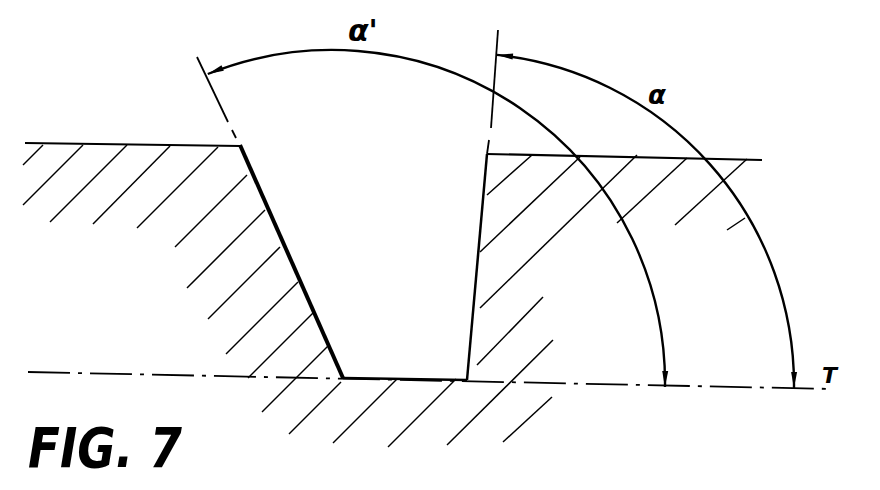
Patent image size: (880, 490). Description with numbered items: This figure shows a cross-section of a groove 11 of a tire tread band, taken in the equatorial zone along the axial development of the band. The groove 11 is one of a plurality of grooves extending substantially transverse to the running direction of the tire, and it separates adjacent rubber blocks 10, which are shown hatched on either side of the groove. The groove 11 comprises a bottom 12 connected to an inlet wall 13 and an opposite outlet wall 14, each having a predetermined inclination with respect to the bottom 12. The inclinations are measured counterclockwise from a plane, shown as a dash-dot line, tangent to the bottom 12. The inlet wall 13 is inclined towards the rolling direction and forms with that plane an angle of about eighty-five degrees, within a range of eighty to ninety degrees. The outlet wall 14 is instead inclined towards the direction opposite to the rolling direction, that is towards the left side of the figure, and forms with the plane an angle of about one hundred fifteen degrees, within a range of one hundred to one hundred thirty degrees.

The rubber block 10 is at (110, 144).
The groove 11 is at (347, 205).
The bottom 12 is at (415, 378).
The inlet wall 13 is at (480, 273).
The outlet wall 14 is at (303, 289).